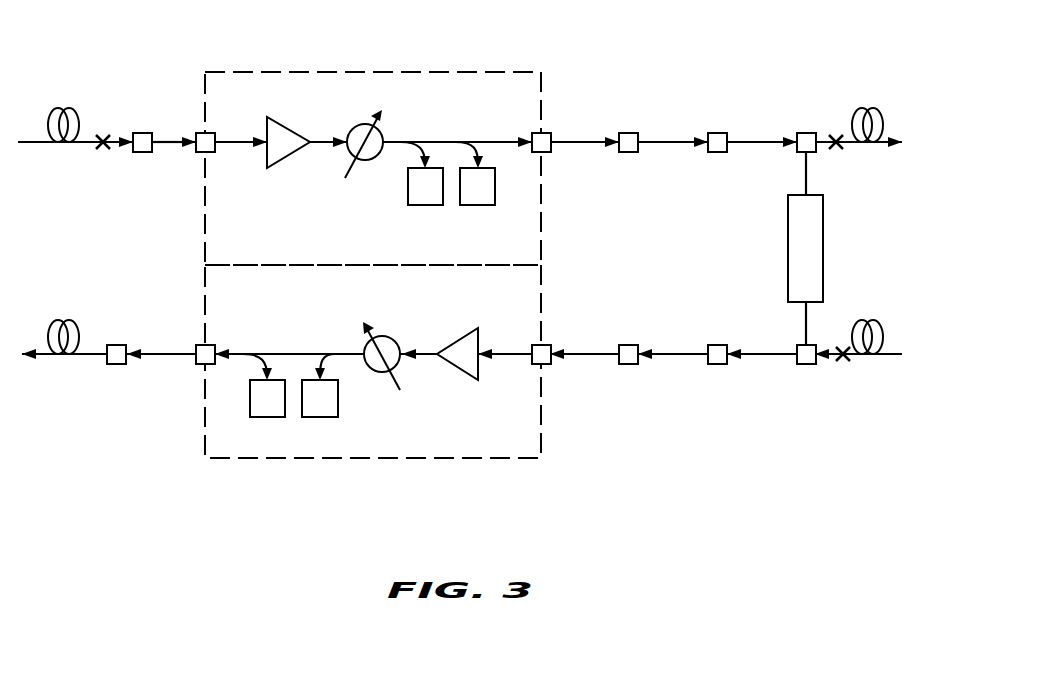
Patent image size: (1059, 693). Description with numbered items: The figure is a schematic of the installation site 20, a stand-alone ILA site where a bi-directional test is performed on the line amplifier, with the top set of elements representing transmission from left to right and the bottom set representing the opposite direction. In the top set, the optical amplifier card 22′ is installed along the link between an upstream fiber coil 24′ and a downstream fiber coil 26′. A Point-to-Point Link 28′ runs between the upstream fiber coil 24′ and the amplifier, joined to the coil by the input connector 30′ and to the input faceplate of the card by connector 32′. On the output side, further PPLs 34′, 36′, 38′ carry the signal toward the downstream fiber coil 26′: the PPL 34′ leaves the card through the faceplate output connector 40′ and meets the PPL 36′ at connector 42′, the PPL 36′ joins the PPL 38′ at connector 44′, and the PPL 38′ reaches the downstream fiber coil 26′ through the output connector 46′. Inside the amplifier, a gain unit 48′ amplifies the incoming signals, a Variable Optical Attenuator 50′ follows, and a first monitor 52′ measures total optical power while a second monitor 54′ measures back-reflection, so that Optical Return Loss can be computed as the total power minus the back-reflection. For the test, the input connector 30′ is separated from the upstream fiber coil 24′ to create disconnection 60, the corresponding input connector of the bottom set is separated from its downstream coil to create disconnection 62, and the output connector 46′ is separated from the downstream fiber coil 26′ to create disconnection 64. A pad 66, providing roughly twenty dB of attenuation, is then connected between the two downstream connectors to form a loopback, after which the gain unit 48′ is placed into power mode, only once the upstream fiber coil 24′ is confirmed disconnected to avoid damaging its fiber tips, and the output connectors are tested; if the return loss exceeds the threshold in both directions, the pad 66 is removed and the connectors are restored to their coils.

The installation site 20 is at (668, 524).
The line amplifier 22′ is at (408, 71).
The upstream fiber coil 24′ is at (46, 143).
The downstream fiber coil 26′ is at (880, 150).
The Point-to-Point Link 28′ is at (168, 138).
The input connector 30′ is at (142, 133).
The connector 32′ is at (203, 152).
The Point-to-Point Link 34′ is at (575, 140).
The Point-to-Point Link 36′ is at (663, 140).
The Point-to-Point Link 38′ is at (770, 140).
The output connector 40′ is at (545, 152).
The connector 42′ is at (626, 152).
The connector 44′ is at (715, 152).
The output connector 46′ is at (801, 133).
The gain unit 48′ is at (286, 158).
The Variable Optical Attenuator 50′ is at (357, 125).
The first monitor 52′ is at (425, 205).
The second monitor 54′ is at (478, 205).
The disconnection 60 is at (103, 133).
The disconnection 62 is at (845, 360).
The disconnection 64 is at (836, 134).
The pad 66 is at (823, 240).